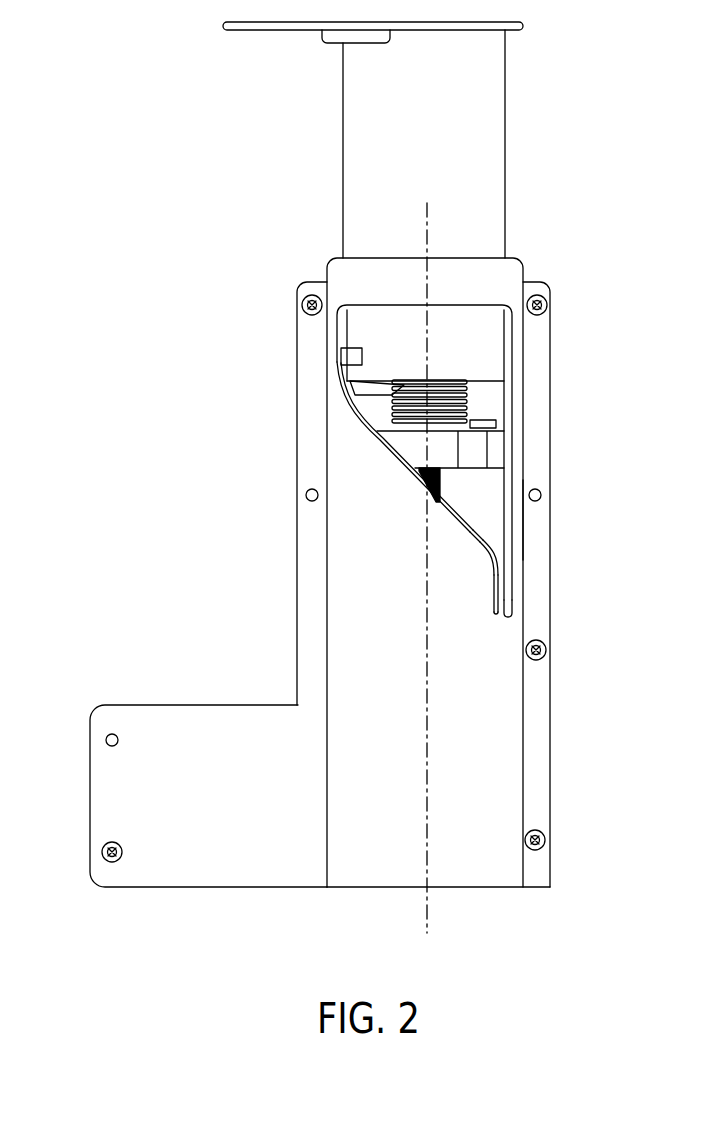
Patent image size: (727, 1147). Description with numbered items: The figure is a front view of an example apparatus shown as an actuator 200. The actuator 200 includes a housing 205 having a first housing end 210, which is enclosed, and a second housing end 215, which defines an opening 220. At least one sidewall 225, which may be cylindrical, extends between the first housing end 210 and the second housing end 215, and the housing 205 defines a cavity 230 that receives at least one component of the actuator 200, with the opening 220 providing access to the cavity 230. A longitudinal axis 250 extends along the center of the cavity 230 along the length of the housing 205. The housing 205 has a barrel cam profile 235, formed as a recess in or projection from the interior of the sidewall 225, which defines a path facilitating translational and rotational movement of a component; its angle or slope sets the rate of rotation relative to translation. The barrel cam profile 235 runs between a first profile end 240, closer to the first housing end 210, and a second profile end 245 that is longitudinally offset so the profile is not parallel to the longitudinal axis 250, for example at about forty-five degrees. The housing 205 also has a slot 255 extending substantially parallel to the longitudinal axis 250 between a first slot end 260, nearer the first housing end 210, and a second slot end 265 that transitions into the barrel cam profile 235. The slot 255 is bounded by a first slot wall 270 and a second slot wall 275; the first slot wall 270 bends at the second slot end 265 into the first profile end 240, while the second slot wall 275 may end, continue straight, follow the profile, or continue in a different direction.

The actuator 200 is at (110, 195).
The housing 205 is at (552, 603).
The first housing end 210 is at (447, 887).
The second housing end 215 is at (510, 258).
The opening 220 is at (372, 258).
The sidewall 225 is at (470, 688).
The cavity 230 is at (480, 406).
The barrel cam profile 235 is at (358, 413).
The first profile end 240 is at (489, 548).
The second profile end 245 is at (342, 318).
The longitudinal axis 250 is at (427, 238).
The slot 255 is at (523, 518).
The first slot end 260 is at (497, 617).
The second slot end 265 is at (489, 560).
The first slot wall 270 is at (495, 598).
The second slot wall 275 is at (520, 573).